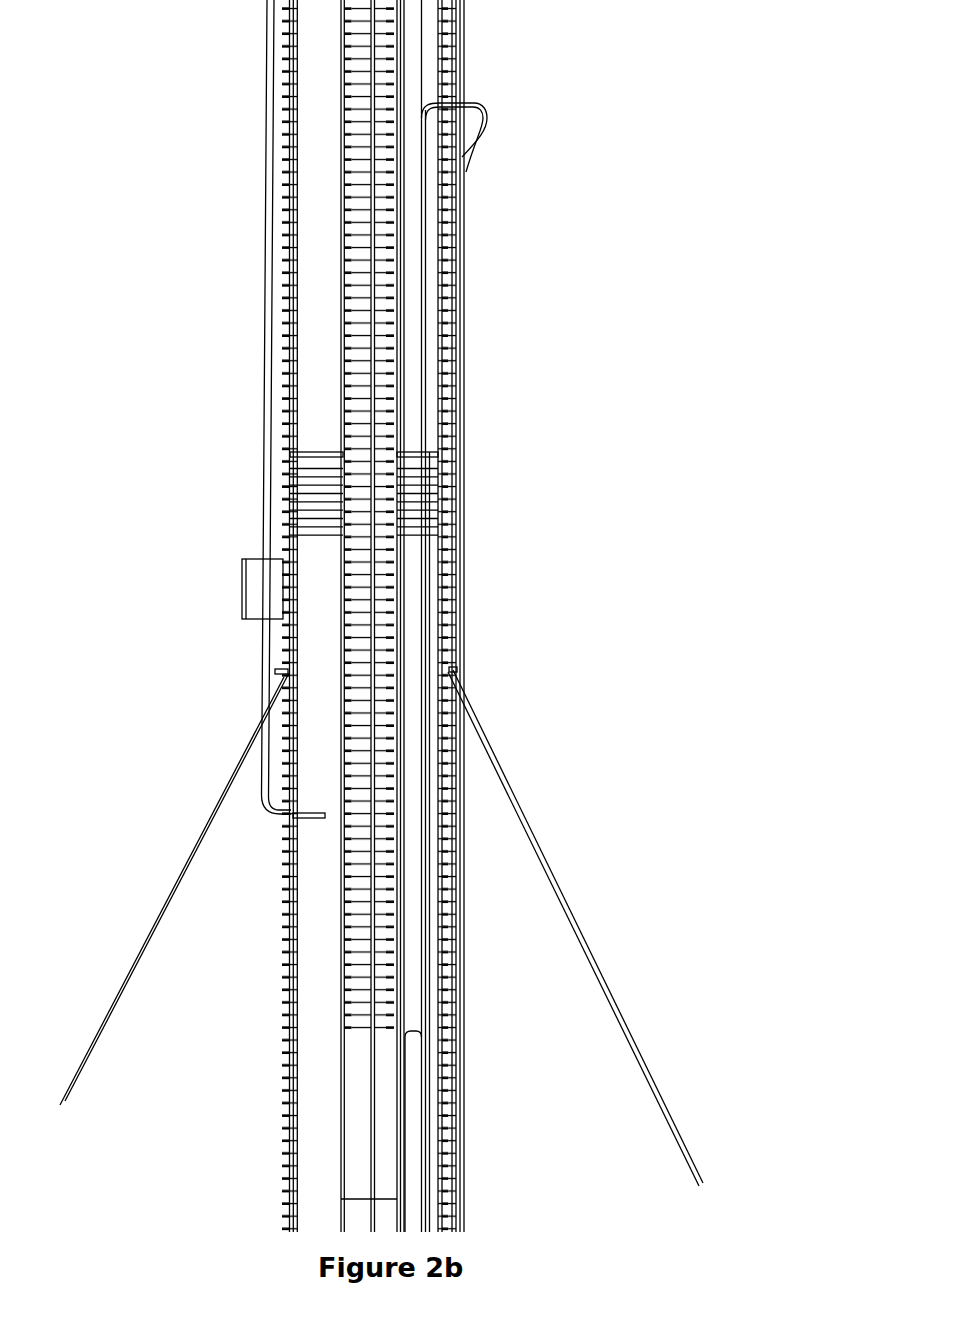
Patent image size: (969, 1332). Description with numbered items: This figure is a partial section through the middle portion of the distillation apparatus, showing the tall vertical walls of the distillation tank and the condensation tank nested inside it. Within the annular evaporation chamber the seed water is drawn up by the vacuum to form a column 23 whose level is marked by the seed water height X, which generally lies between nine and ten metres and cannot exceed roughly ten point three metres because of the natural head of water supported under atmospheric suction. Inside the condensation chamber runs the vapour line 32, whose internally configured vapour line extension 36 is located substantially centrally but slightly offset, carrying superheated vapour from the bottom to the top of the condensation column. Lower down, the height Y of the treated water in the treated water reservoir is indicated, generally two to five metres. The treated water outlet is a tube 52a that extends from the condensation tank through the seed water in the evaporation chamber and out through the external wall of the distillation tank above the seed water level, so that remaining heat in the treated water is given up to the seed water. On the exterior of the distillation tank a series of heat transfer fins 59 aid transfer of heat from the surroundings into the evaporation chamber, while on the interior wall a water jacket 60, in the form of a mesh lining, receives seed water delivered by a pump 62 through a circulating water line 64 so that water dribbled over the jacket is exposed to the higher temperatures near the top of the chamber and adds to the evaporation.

The column 23 is at (316, 930).
The vapour line 32 is at (460, 22).
The vapour line extension 36 is at (372, 79).
The tube 52a is at (422, 368).
The heat transfer fins 59 is at (290, 135).
The water jacket 60 is at (297, 427).
The pump 62 is at (242, 596).
The circulating water line 64 is at (268, 318).
The height of seed water X is at (430, 533).
The height of treated water Y is at (383, 1198).